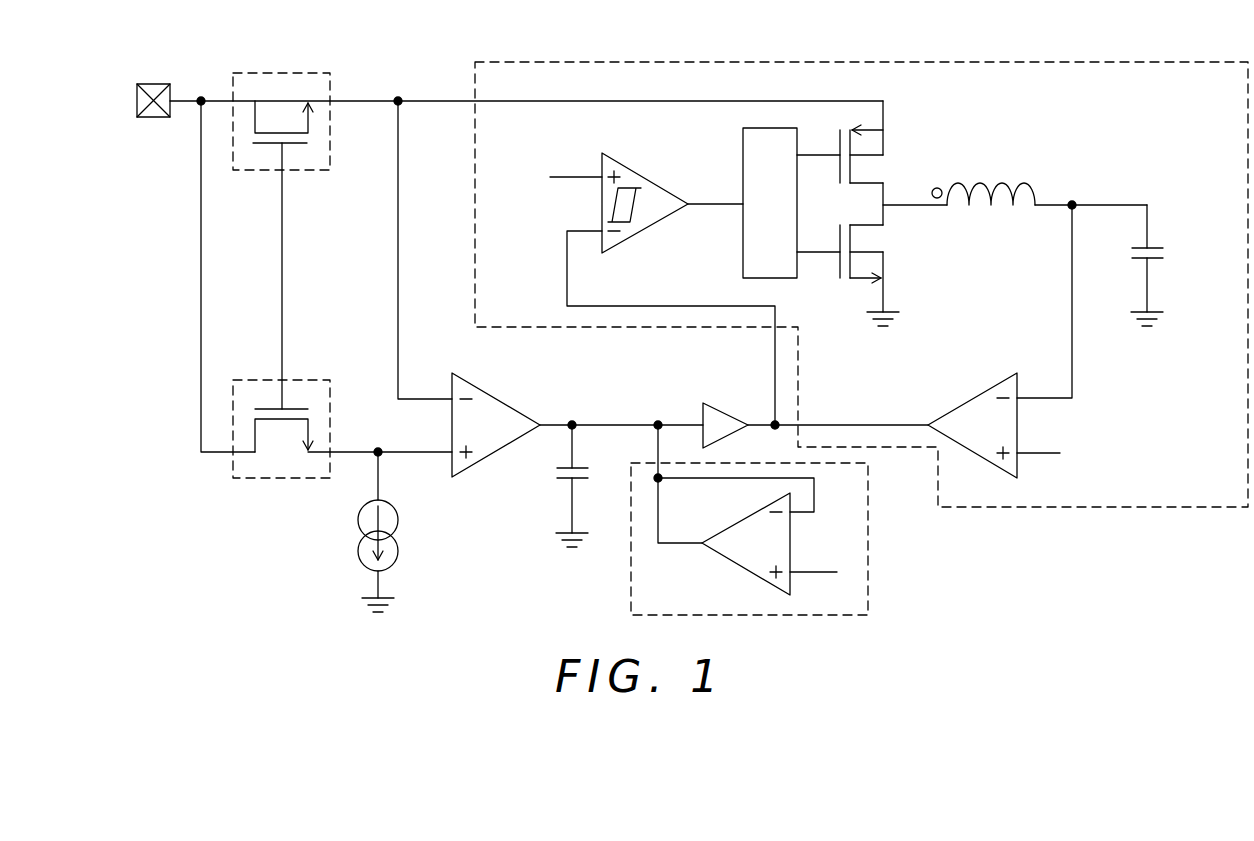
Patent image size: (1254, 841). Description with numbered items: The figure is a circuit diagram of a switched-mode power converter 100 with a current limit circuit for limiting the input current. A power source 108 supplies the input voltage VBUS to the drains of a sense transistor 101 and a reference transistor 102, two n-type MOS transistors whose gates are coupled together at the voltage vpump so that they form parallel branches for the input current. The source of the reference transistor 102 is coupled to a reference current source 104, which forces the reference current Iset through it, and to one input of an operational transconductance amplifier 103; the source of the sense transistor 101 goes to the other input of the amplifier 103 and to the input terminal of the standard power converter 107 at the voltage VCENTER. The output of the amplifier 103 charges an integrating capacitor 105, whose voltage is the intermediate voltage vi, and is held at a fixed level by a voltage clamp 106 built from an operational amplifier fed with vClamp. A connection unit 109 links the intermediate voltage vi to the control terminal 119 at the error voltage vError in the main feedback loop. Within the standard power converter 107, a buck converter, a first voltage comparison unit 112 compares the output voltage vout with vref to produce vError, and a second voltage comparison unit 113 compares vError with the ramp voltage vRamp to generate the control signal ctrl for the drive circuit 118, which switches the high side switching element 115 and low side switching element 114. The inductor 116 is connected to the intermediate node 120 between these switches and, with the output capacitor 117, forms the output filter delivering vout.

The switched-mode power converter 100 is at (1040, 550).
The sense transistor 101 is at (243, 170).
The reference transistor 102 is at (242, 380).
The operational transconductance amplifier 103 is at (505, 400).
The reference current source 104 is at (360, 558).
The integrating capacitor 105 is at (555, 472).
The voltage clamp 106 is at (868, 538).
The standard power converter 107 is at (475, 155).
The power source 108 is at (157, 118).
The connection unit 109 is at (701, 411).
The first voltage comparison unit 112 is at (959, 398).
The second voltage comparison unit 113 is at (650, 180).
The low side switching element 114 is at (888, 270).
The high side switching element 115 is at (888, 140).
The inductor 116 is at (1003, 178).
The output capacitor 117 is at (1170, 253).
The drive circuit 118 is at (770, 203).
The control terminal 119 is at (774, 421).
The intermediate node 120 is at (932, 188).